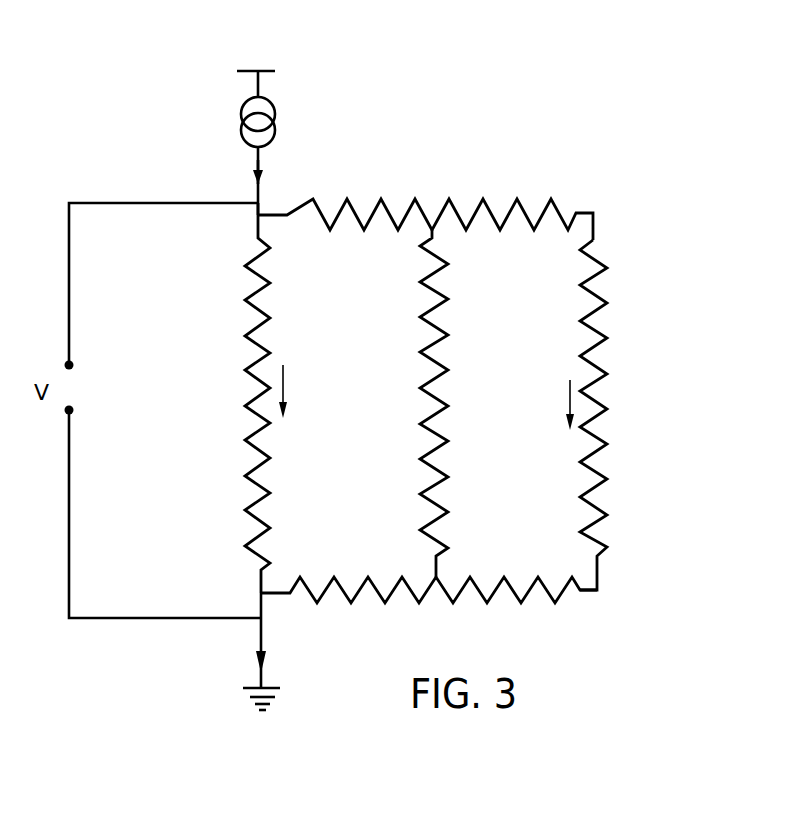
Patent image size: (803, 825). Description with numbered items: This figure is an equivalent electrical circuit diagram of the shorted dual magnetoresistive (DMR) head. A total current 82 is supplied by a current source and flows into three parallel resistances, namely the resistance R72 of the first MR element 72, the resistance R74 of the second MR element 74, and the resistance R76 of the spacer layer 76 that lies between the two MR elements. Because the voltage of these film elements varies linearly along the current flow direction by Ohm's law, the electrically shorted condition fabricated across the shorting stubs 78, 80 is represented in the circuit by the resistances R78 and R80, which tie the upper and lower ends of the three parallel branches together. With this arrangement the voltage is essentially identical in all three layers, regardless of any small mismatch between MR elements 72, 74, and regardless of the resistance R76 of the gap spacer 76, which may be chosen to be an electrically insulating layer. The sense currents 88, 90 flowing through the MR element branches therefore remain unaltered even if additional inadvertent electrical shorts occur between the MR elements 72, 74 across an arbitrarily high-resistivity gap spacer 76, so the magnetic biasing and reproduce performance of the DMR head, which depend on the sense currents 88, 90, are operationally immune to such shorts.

The total current 82 is at (259, 158).
The sense current 88 is at (283, 378).
The sense current 90 is at (570, 395).
The resistance of MR element 72 R72 is at (227, 398).
The resistance of MR element 74 R74 is at (622, 415).
The resistance of spacer layer 76 R76 is at (405, 403).
The resistance of shorting stub 78 R78 is at (429, 613).
The resistance of shorting stub 80 R80 is at (425, 197).
The MR element 72 is at (253, 480).
The MR element 74 is at (600, 328).
The spacer layer 76 is at (427, 463).
The shorting stub 78 is at (480, 600).
The shorting stub 80 is at (458, 208).